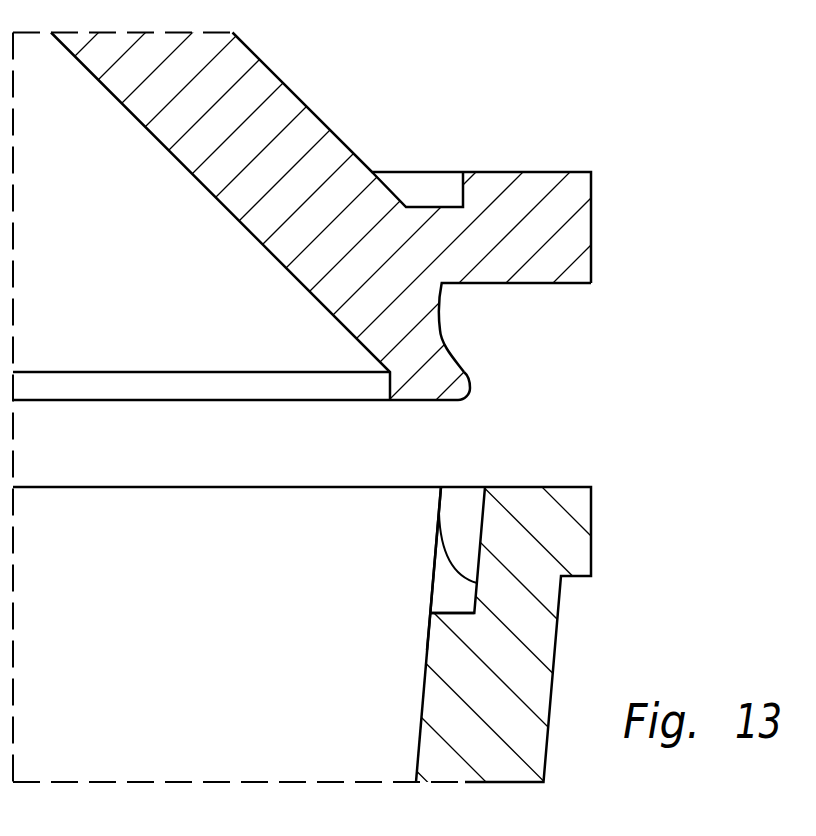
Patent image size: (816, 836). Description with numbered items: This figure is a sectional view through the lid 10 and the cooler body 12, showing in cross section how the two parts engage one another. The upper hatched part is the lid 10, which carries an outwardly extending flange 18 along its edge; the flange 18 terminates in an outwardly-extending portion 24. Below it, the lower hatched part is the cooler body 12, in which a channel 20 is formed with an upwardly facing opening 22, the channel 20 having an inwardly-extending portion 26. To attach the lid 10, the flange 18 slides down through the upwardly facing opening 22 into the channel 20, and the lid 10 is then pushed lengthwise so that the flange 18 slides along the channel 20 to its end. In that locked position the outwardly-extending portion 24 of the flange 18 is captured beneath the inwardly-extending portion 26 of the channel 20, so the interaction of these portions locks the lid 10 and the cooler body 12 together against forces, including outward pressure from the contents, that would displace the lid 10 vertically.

The lid 10 is at (414, 600).
The cooler body 12 is at (408, 200).
The flange 18 is at (437, 333).
The channel 20 is at (442, 552).
The upwardly facing opening 22 is at (434, 542).
The outwardly-extending portion 24 is at (467, 382).
The inwardly-extending portion 26 is at (435, 597).